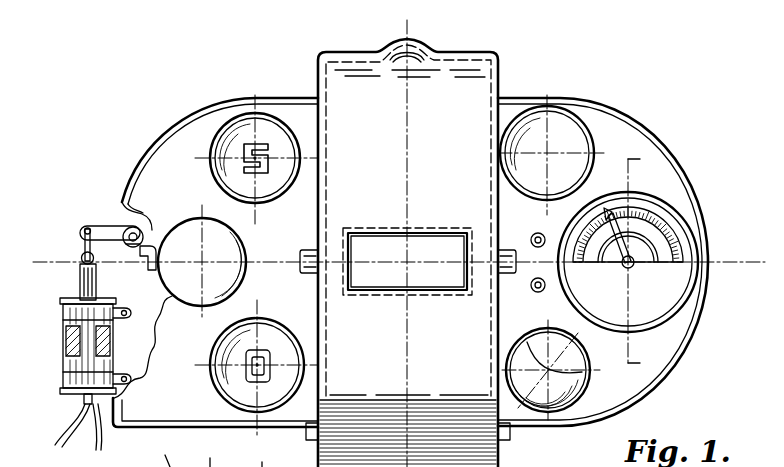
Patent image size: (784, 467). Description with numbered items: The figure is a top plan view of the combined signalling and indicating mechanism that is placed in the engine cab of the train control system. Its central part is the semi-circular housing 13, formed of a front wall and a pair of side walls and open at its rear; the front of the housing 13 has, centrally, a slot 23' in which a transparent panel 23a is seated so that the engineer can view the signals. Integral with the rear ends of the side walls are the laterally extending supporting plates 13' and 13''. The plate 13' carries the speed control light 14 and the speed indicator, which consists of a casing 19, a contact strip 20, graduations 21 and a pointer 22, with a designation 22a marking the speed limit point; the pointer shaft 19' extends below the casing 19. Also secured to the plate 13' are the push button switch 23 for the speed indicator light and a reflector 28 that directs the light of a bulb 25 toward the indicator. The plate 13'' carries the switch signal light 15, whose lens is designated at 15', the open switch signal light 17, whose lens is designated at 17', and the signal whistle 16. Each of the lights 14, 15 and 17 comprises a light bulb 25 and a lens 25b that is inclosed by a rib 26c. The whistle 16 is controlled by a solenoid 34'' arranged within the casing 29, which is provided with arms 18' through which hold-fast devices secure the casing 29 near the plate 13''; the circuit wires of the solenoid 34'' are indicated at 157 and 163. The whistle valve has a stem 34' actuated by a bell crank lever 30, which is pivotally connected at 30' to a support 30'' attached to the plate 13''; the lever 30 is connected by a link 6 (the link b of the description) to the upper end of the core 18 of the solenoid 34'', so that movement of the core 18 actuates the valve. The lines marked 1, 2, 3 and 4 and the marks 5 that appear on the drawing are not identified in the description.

The section line 1-1 / instrument panel 1 is at (765, 284).
The center line 2 is at (407, 20).
The section line 3- 3 is at (642, 264).
The section line 4- 4 is at (538, 426).
The center lines of instrument openings 5 is at (250, 261).
The pivot pin 6 is at (80, 232).
The housing 13 is at (408, 238).
The supporting plate 13' is at (603, 257).
The supporting plate 13'' is at (240, 262).
The speed control light 14 is at (553, 128).
The switch signal light 15 is at (255, 140).
The lens designation 15' is at (302, 157).
The signal whistle 16 is at (197, 240).
The open switch signal light 17 is at (256, 383).
The lens designation 17' is at (278, 342).
The core 18 is at (69, 334).
The arms 18' is at (131, 346).
The casing 19 is at (646, 263).
The pointer shaft 19' is at (628, 219).
The contact strip 20 is at (688, 240).
The graduations 21 is at (600, 262).
The pointer 22 is at (620, 252).
The speed limit designation 22a is at (598, 206).
The push button switch 23 is at (536, 262).
The transparent panel 23a is at (428, 236).
The slot 23' is at (415, 246).
The light bulb 25 is at (200, 454).
The lens 25b is at (153, 453).
The rib 26c is at (244, 459).
The reflector 28 is at (562, 405).
The casing 29 is at (68, 375).
The bell crank lever 30 is at (110, 207).
The pivotal connection 30' is at (129, 260).
The support 30'' is at (150, 215).
The valve stem 34' is at (144, 270).
The solenoid 34'' is at (65, 341).
The circuit wire 157 is at (62, 435).
The circuit wire 163 is at (102, 435).